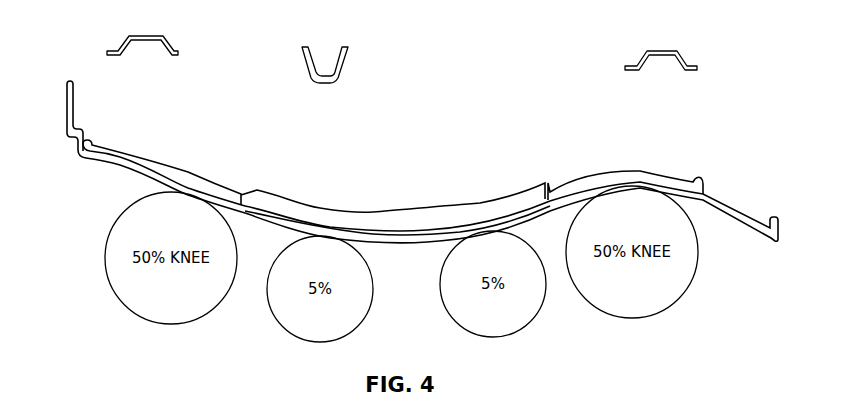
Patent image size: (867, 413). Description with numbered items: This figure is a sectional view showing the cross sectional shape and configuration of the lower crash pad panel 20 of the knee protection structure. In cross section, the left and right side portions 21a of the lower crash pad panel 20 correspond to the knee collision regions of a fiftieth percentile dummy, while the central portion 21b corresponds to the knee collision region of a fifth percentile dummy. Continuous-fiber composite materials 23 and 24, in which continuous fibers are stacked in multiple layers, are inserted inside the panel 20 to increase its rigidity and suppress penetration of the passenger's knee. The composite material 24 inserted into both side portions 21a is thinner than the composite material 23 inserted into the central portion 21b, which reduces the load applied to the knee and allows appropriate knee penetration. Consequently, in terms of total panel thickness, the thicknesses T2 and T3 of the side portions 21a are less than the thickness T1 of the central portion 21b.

The lower crash pad panel 20 is at (418, 211).
The side portions 21a is at (115, 167).
The central portion 21b is at (397, 240).
The continuous-fiber composite material 23 is at (373, 216).
The continuous-fiber composite material 24 is at (210, 188).
The thickness of the central portion T1 is at (427, 242).
The thickness of the side portion T2 is at (590, 200).
The thickness of the side portion T3 is at (188, 195).